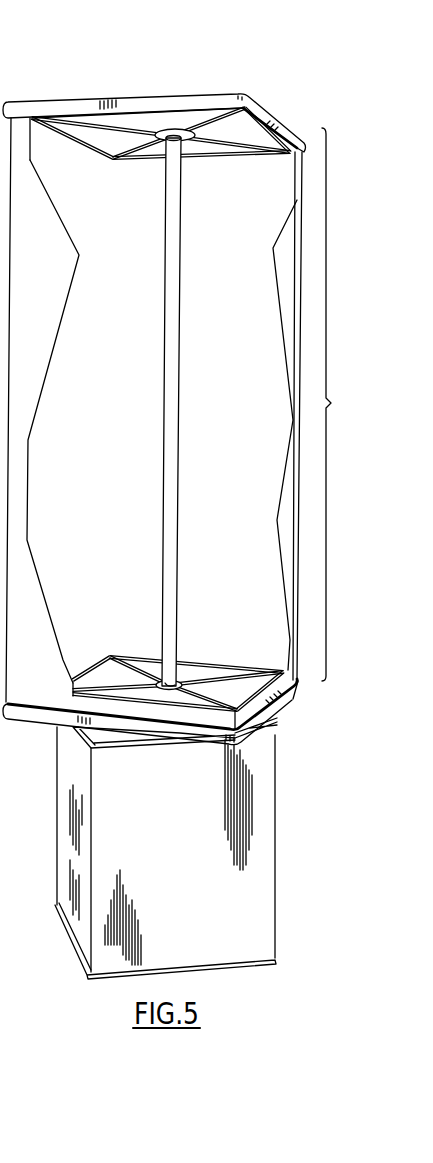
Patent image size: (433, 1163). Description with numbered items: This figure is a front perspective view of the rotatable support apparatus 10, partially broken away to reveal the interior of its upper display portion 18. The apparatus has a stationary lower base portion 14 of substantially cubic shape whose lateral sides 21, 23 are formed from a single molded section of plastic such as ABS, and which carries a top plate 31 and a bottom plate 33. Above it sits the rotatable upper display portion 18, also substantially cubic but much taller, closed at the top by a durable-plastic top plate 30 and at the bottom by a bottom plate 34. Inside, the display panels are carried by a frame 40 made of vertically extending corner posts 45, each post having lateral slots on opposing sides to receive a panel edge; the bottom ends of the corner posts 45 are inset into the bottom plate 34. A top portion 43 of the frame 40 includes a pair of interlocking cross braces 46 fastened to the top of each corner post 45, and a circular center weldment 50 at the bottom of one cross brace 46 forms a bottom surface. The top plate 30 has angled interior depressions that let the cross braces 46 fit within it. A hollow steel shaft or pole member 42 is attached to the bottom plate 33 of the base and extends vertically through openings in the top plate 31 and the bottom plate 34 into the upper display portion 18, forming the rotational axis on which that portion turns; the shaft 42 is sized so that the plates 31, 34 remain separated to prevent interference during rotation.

The rotatable support apparatus 10 is at (179, 409).
The stationary lower base portion 14 is at (174, 862).
The upper display portion 18 is at (306, 517).
The lateral surface 21 is at (60, 822).
The lateral surface 23 is at (250, 883).
The top plate 30 is at (172, 102).
The top plate 31 is at (278, 727).
The bottom plate 33 is at (272, 967).
The bottom plate 34 is at (295, 683).
The frame 40 is at (338, 404).
The hollow shaft or pole member 42 is at (176, 415).
The top portion of the frame 43 is at (130, 118).
The corner post 45 is at (302, 330).
The cross brace 46 is at (85, 122).
The center weldment 50 is at (187, 140).